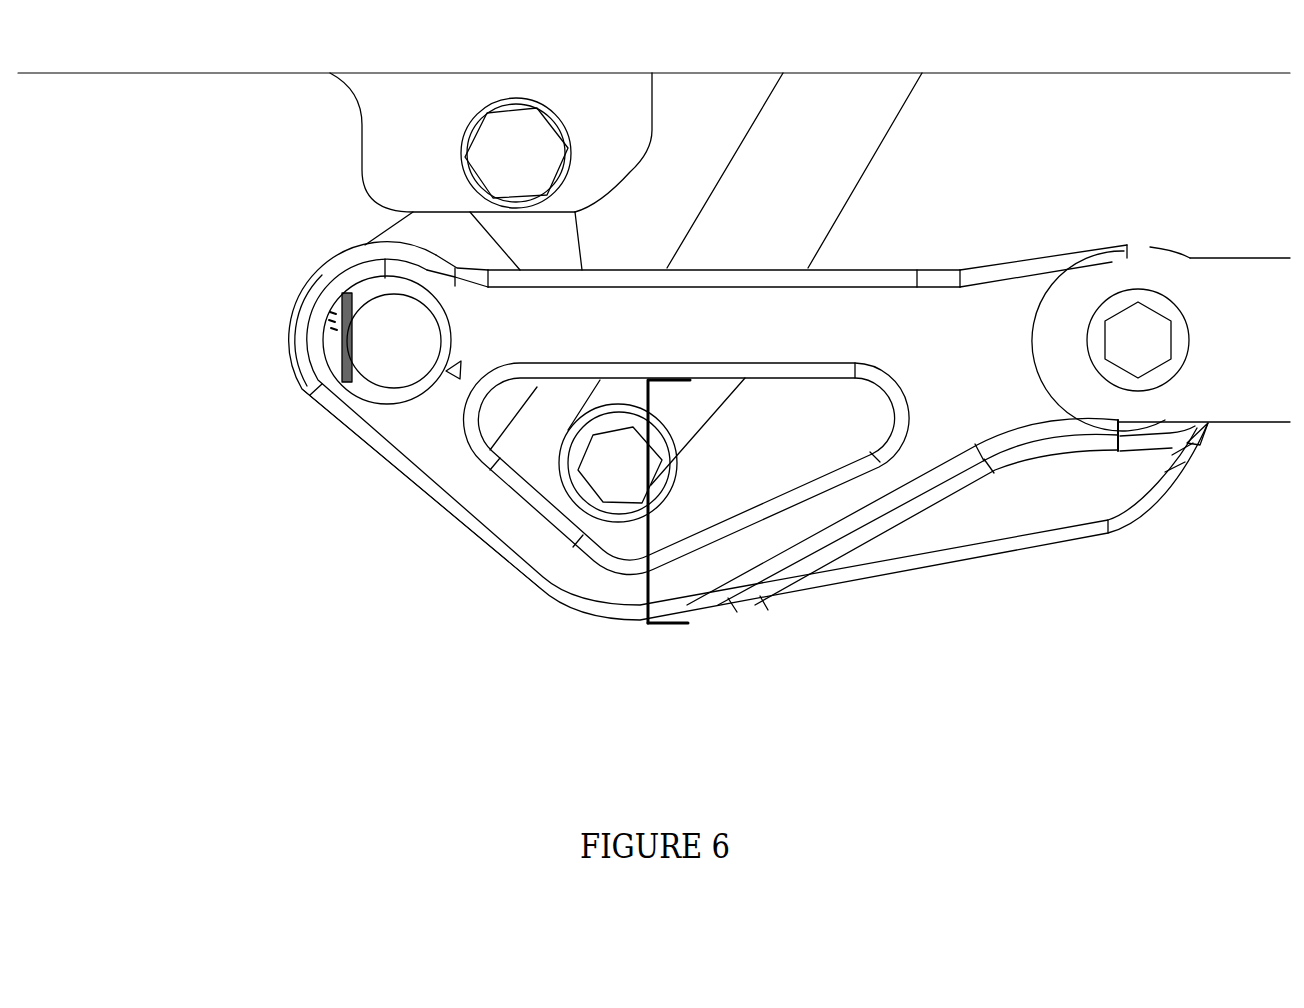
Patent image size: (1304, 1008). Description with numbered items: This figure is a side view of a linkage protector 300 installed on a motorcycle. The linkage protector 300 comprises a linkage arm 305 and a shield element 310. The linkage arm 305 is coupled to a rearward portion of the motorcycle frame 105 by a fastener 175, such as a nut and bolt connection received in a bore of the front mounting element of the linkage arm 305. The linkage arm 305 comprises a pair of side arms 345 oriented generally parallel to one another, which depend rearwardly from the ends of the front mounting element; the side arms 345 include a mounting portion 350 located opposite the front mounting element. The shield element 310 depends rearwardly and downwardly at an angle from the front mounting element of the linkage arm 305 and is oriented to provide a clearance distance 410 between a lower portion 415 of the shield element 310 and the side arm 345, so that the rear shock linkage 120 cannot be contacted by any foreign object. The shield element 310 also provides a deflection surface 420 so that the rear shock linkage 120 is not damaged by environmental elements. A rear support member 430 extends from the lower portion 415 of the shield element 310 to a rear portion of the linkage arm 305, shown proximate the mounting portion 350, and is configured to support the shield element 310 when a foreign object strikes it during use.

The motorcycle frame 105 is at (1228, 300).
The rear shock linkage 120 is at (703, 409).
The fastener 175 is at (1130, 330).
The linkage protector 300 is at (317, 528).
The linkage arm 305 is at (1038, 245).
The shield element 310 is at (1123, 548).
The side arms 345 is at (627, 322).
The mounting portion 350 is at (258, 275).
The clearance distance 410 is at (648, 485).
The lower portion 415 is at (634, 632).
The deflection surface 420 is at (945, 563).
The rear support member 430 is at (437, 493).